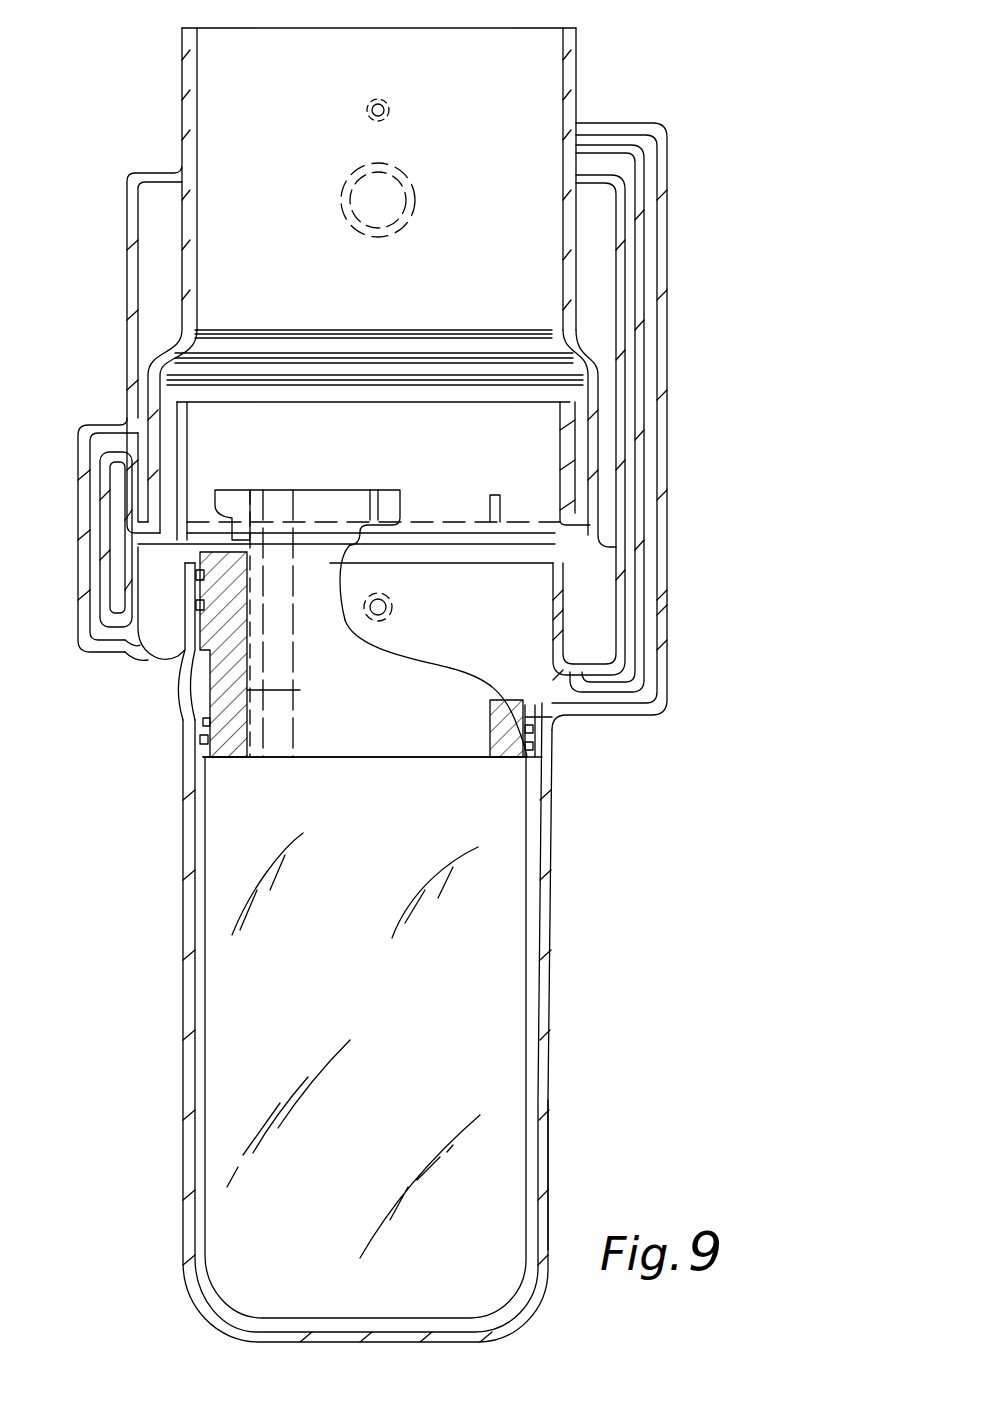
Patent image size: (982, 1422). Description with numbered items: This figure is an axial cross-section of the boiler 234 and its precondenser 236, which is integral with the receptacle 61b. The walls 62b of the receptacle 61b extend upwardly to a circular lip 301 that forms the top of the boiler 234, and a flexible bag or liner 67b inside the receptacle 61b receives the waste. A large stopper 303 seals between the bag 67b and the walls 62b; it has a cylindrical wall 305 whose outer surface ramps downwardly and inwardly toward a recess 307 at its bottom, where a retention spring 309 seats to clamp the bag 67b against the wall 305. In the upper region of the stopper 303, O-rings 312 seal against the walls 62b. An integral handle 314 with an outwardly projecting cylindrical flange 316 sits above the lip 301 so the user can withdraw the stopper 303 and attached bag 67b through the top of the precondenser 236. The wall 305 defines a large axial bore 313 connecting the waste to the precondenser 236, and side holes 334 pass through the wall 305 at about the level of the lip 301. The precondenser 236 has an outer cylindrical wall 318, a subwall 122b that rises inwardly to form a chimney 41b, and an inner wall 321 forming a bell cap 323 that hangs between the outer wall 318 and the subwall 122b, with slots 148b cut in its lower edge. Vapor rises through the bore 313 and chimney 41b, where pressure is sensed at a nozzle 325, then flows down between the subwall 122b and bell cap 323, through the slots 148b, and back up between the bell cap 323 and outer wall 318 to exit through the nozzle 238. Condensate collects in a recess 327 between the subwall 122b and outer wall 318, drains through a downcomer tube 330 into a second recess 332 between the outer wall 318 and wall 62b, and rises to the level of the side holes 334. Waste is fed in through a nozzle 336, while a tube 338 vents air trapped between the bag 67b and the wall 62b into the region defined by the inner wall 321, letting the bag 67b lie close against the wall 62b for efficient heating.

The precondenser 236 is at (630, 92).
The nozzle 325 is at (388, 108).
The nozzle 238 is at (352, 228).
The inner wall 321 is at (563, 256).
The outer cylindrical wall 318 is at (640, 265).
The bell cap 323 is at (160, 397).
The chimney 41b is at (485, 403).
The subwall 122b is at (572, 443).
The cylindrical flange 316 is at (227, 492).
The handle 314 is at (320, 490).
The lip 301 is at (430, 563).
The slots 148b is at (503, 508).
The downcomer tube 330 is at (100, 548).
The side holes 334 is at (353, 532).
The recess 327 is at (140, 563).
The O-rings 312 is at (205, 580).
The tube 338 is at (650, 620).
The second recess 332 is at (170, 628).
The cylindrical wall 305 is at (220, 668).
The axial bore 313 is at (247, 693).
The recess 307 is at (210, 722).
The retention spring 309 is at (202, 740).
The nozzle 336 is at (378, 620).
The stopper 303 is at (268, 770).
The boiler 234 is at (617, 853).
The bag 67b is at (535, 988).
The walls 62b is at (545, 1102).
The receptacle 61b is at (592, 1153).